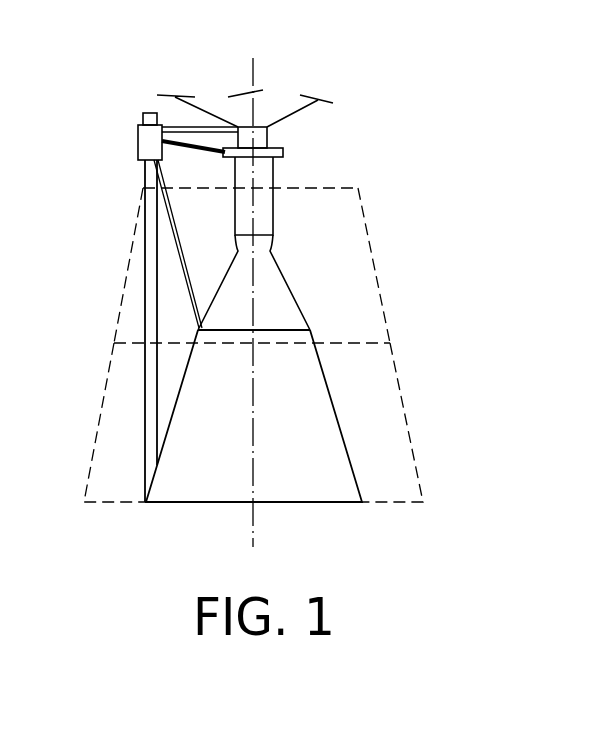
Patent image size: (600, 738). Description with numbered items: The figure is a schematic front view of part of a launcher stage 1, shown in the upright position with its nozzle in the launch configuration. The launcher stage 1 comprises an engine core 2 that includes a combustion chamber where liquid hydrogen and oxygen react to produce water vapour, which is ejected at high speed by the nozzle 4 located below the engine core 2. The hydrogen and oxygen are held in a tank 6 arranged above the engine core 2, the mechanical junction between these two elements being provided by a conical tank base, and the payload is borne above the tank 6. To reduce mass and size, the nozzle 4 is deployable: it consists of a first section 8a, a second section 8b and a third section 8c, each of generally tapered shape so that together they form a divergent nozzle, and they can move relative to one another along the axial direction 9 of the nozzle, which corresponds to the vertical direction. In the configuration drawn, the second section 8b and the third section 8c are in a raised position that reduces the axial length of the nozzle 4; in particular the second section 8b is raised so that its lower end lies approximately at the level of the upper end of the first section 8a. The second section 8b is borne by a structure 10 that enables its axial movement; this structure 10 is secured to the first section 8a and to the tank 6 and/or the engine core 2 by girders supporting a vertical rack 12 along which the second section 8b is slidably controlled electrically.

The launcher stage 1 is at (205, 82).
The engine core 2 is at (263, 170).
The nozzle 4 is at (482, 292).
The tank 6 is at (285, 100).
The first section 8a is at (313, 382).
The second section 8b is at (366, 275).
The third section 8c is at (393, 418).
The axial direction 9 is at (253, 525).
The structure 10 is at (145, 273).
The vertical rack 12 is at (145, 373).